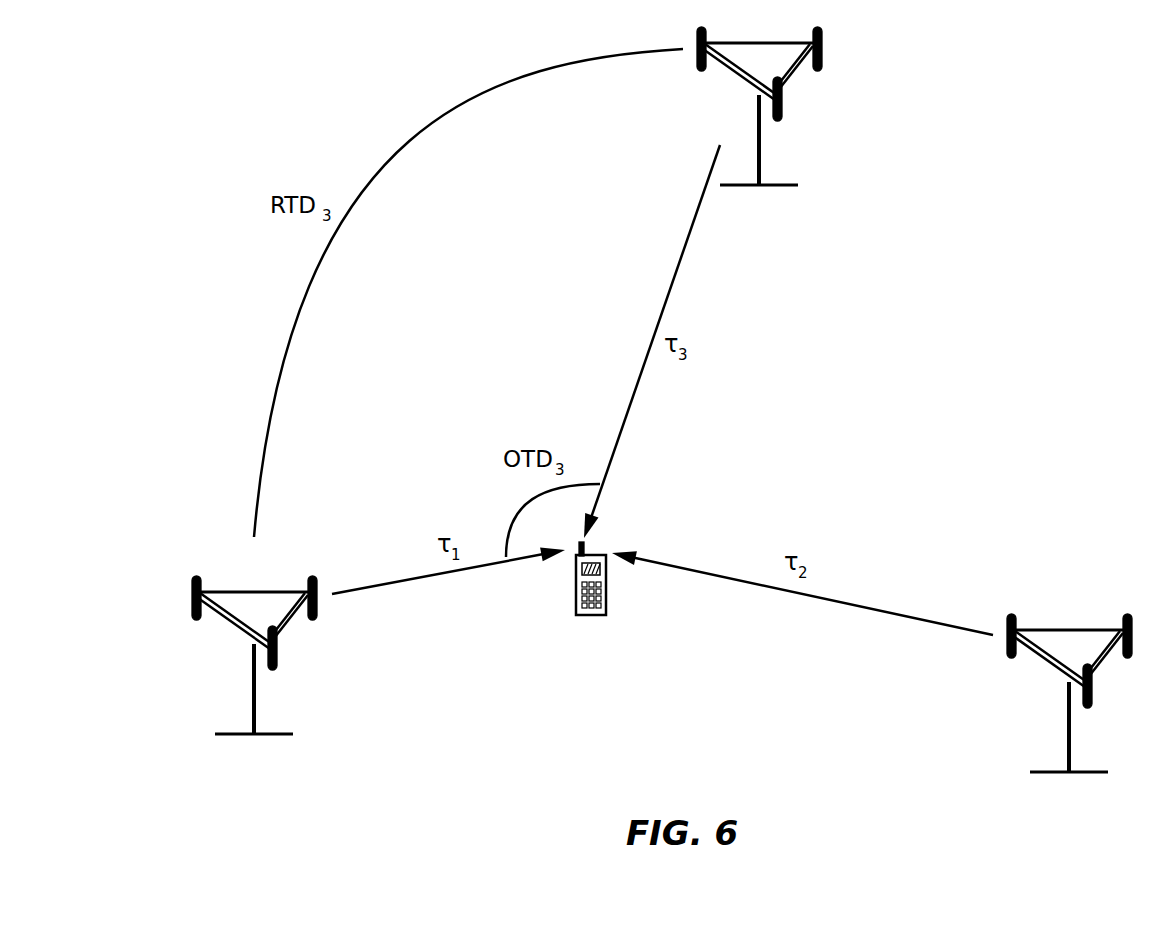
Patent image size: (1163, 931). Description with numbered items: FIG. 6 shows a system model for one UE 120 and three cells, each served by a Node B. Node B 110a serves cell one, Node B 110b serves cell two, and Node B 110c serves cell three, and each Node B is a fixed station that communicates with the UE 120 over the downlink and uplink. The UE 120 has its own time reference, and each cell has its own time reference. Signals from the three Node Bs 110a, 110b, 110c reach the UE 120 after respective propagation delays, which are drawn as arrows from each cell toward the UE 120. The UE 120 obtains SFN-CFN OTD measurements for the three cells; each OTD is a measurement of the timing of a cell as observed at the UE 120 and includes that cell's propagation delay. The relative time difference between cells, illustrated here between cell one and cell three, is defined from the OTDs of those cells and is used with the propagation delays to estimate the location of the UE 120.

The Node B 110a is at (254, 681).
The Node B 110b is at (1069, 719).
The Node B 110c is at (759, 133).
The UE 120 is at (574, 585).